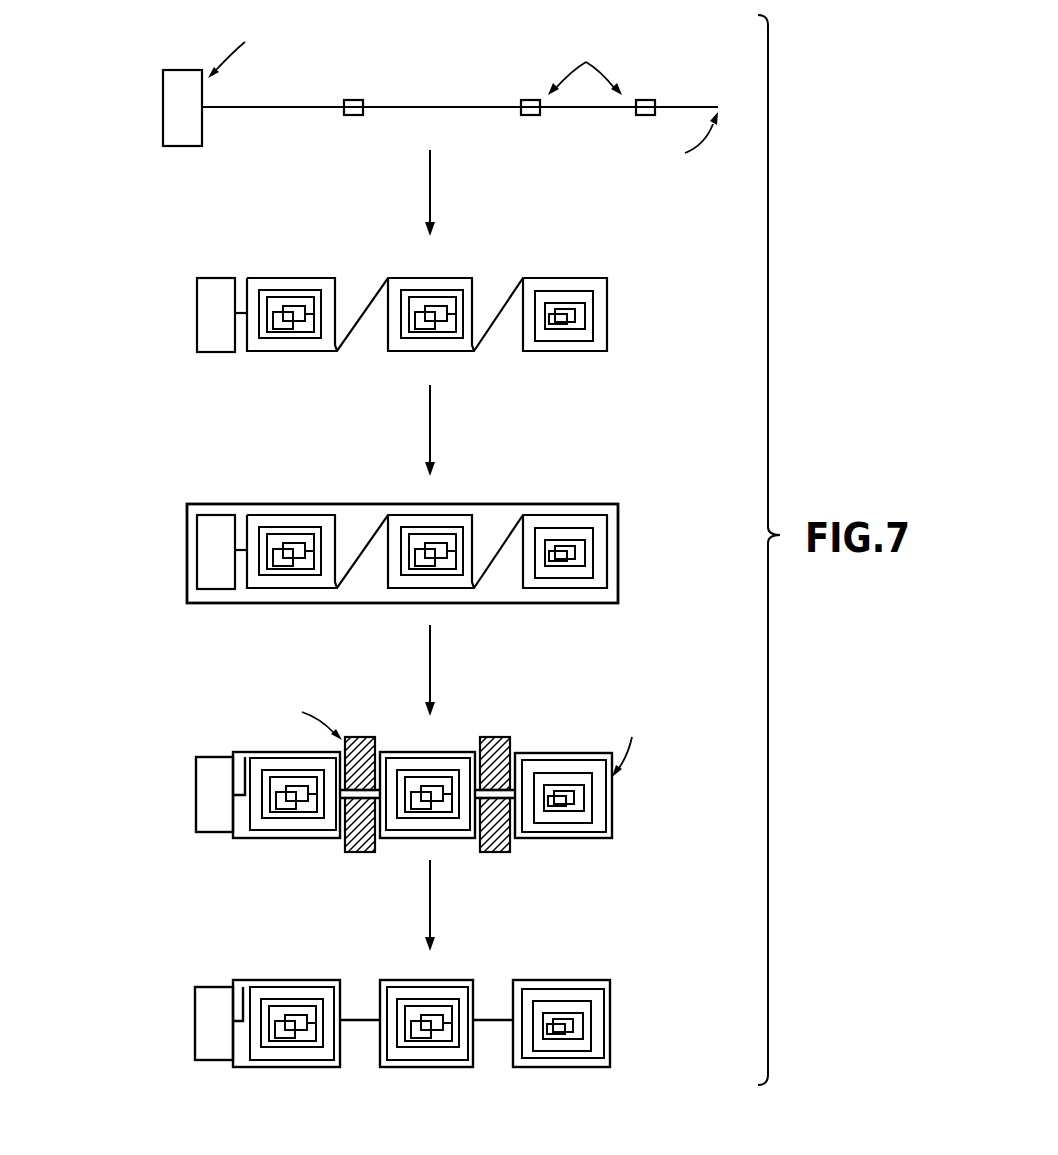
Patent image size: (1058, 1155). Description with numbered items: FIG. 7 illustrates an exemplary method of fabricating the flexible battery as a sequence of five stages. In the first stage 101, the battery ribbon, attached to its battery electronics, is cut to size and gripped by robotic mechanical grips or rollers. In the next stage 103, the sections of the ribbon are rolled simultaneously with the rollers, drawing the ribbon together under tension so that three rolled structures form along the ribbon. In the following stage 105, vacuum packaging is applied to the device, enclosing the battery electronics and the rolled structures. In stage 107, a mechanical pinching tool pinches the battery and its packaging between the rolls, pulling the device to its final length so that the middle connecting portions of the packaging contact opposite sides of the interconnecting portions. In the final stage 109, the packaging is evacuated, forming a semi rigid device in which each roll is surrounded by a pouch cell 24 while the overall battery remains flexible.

The pouch cell 24 is at (585, 980).
The gripping step 101 is at (128, 27).
The rolling step 103 is at (128, 242).
The vacuum packaging step 105 is at (128, 477).
The mechanical pinching step 107 is at (128, 715).
The evacuation step 109 is at (128, 947).